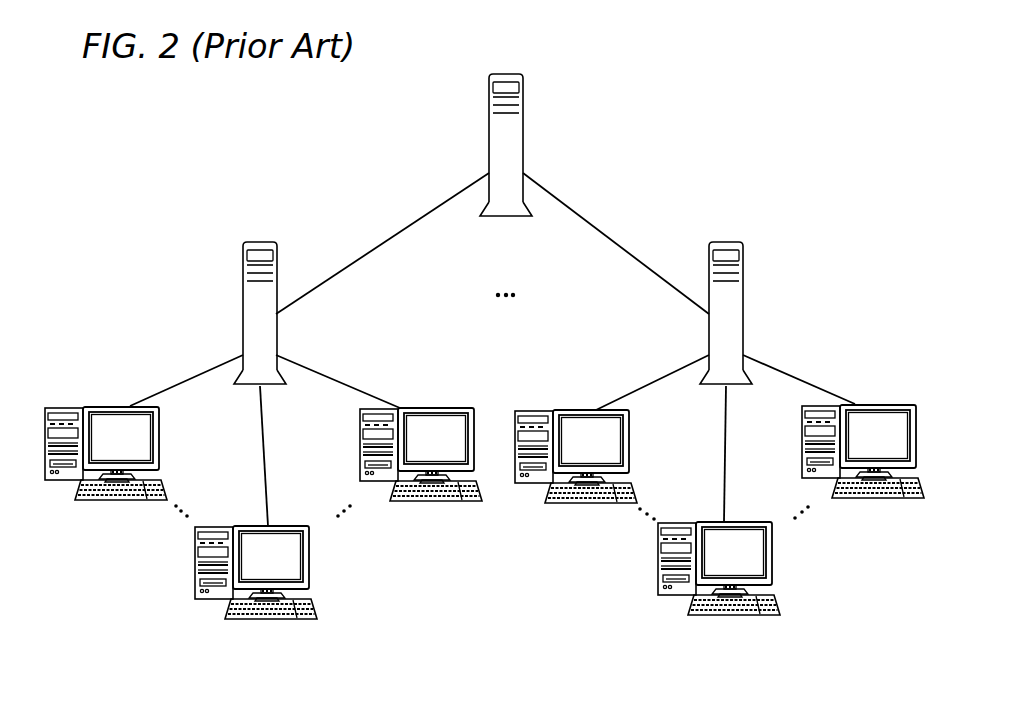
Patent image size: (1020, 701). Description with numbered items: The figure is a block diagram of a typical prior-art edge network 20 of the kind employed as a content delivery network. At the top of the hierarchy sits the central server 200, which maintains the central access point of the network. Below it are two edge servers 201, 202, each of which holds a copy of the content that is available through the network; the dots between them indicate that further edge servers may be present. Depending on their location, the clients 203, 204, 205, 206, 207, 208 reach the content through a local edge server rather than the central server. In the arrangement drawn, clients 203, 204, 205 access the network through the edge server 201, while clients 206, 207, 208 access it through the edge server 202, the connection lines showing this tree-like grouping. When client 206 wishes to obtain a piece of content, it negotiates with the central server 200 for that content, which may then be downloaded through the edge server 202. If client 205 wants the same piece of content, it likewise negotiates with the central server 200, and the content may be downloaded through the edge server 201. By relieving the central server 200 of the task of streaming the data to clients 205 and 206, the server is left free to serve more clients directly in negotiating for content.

The edge network 20 is at (630, 146).
The central server 200 is at (489, 141).
The edge server 201 is at (243, 263).
The edge server 202 is at (743, 262).
The client 203 is at (159, 432).
The client 204 is at (310, 553).
The client 205 is at (360, 438).
The client 206 is at (631, 440).
The client 207 is at (773, 550).
The client 208 is at (802, 436).